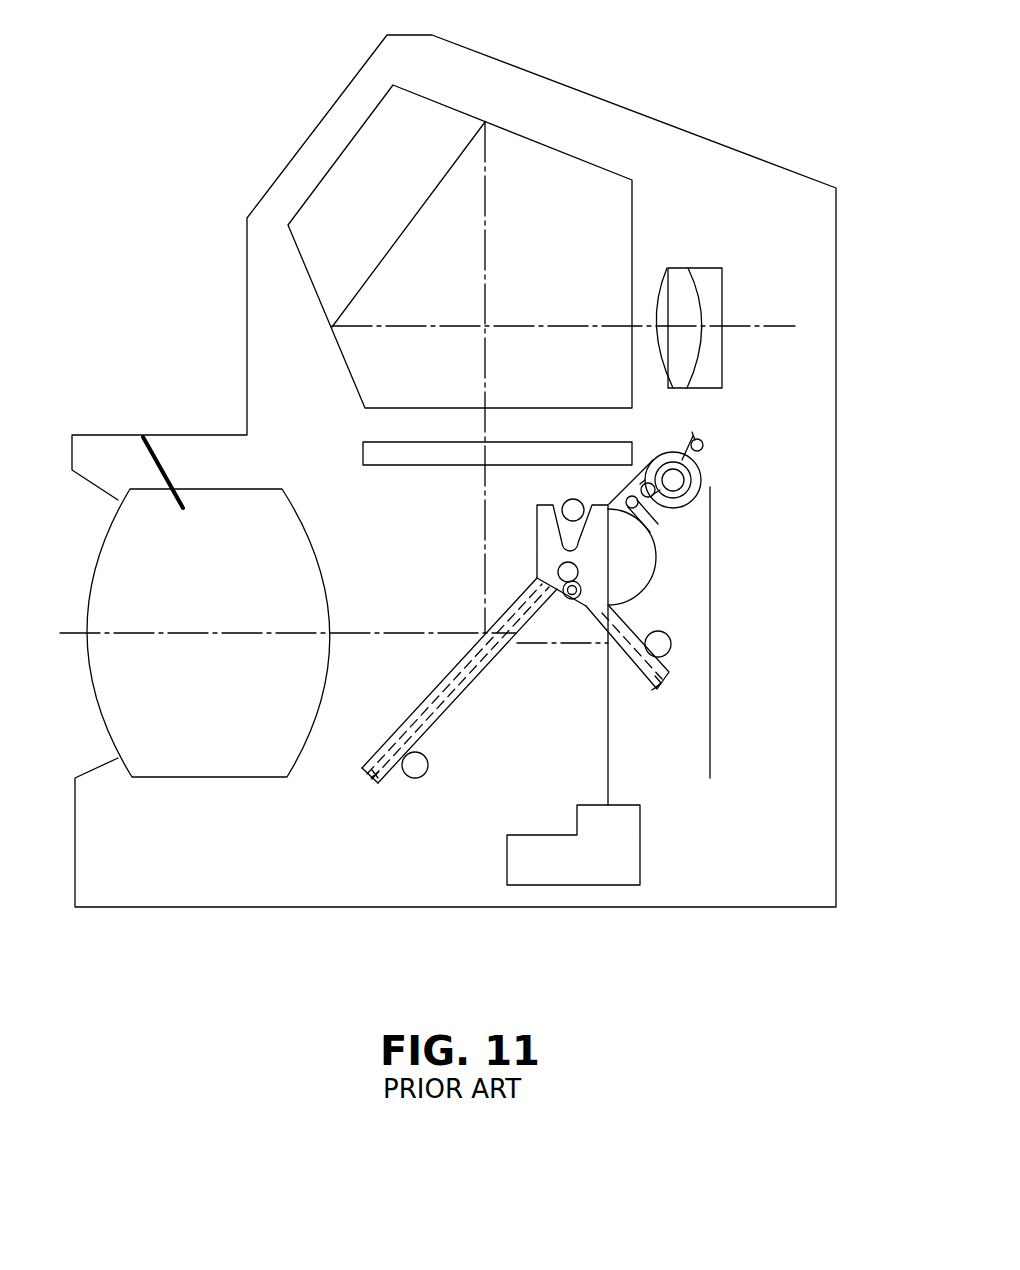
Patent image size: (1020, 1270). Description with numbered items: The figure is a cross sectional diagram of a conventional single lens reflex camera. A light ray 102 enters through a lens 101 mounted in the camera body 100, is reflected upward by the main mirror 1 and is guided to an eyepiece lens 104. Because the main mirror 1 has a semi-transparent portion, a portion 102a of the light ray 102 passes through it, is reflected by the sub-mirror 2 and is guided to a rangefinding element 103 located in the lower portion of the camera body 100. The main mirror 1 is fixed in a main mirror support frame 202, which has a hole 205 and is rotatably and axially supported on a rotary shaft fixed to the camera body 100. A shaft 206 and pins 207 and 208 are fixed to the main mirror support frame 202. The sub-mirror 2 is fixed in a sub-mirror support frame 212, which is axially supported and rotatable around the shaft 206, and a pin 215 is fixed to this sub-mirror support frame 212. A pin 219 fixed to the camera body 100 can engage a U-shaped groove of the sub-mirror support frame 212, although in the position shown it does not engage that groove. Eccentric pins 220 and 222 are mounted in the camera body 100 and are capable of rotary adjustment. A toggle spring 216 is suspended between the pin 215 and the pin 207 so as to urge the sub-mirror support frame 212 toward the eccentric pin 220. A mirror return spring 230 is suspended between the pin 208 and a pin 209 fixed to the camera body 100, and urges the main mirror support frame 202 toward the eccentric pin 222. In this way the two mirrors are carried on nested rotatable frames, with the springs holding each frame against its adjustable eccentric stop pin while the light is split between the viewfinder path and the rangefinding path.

The main mirror 1 is at (370, 780).
The sub-mirror 2 is at (642, 677).
The camera body 100 is at (708, 907).
The lens 101 is at (143, 437).
The light ray 102 is at (344, 633).
The portion of the light ray 102a is at (572, 645).
The rangefinding element 103 is at (552, 873).
The eyepiece lens 104 is at (712, 268).
The main mirror support frame 202 is at (703, 468).
The hole 205 is at (702, 477).
The shaft 206 is at (578, 572).
The pin 207 is at (655, 530).
The pin 208 is at (700, 490).
The pin 209 is at (703, 445).
The sub-mirror support frame 212 is at (652, 690).
The pin 215 is at (575, 598).
The toggle spring 216 is at (581, 590).
The pin 219 is at (562, 503).
The eccentric pin 220 is at (672, 650).
The eccentric pin 222 is at (416, 778).
The mirror return spring 230 is at (693, 433).